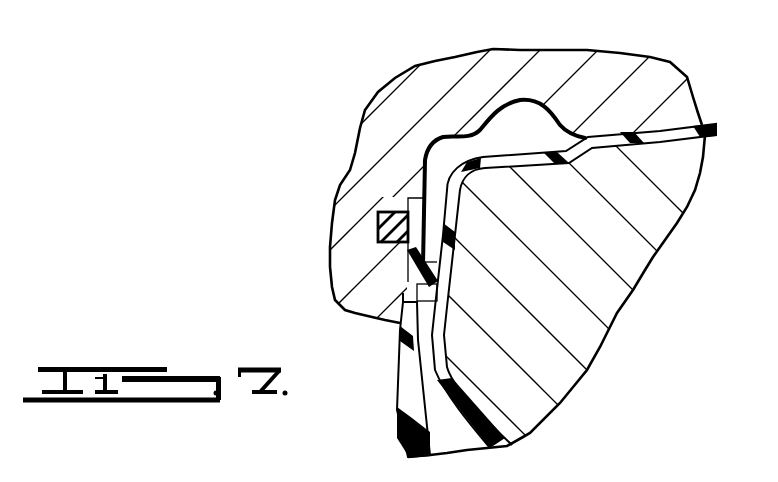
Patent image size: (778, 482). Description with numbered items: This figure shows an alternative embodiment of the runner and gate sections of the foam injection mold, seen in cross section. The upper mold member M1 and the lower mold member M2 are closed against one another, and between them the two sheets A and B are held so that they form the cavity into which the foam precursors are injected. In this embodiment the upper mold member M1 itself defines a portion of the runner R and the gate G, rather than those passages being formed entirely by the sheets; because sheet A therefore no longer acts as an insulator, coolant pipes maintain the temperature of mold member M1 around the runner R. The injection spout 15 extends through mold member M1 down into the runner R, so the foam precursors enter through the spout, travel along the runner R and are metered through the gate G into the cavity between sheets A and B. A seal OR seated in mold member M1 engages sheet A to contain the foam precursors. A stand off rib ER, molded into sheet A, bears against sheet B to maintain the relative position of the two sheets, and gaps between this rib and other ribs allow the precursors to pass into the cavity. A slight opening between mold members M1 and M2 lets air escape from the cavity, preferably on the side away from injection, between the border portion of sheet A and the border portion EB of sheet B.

The upper mold member M1 is at (517, 130).
The mold member M2 is at (622, 298).
The gate G is at (442, 163).
The runner R is at (537, 106).
The injection spout 15 is at (620, 76).
The sheet B is at (665, 144).
The seal OR is at (378, 221).
The stand off rib ER is at (440, 279).
The border portion EB is at (440, 300).
The sheet A is at (398, 356).